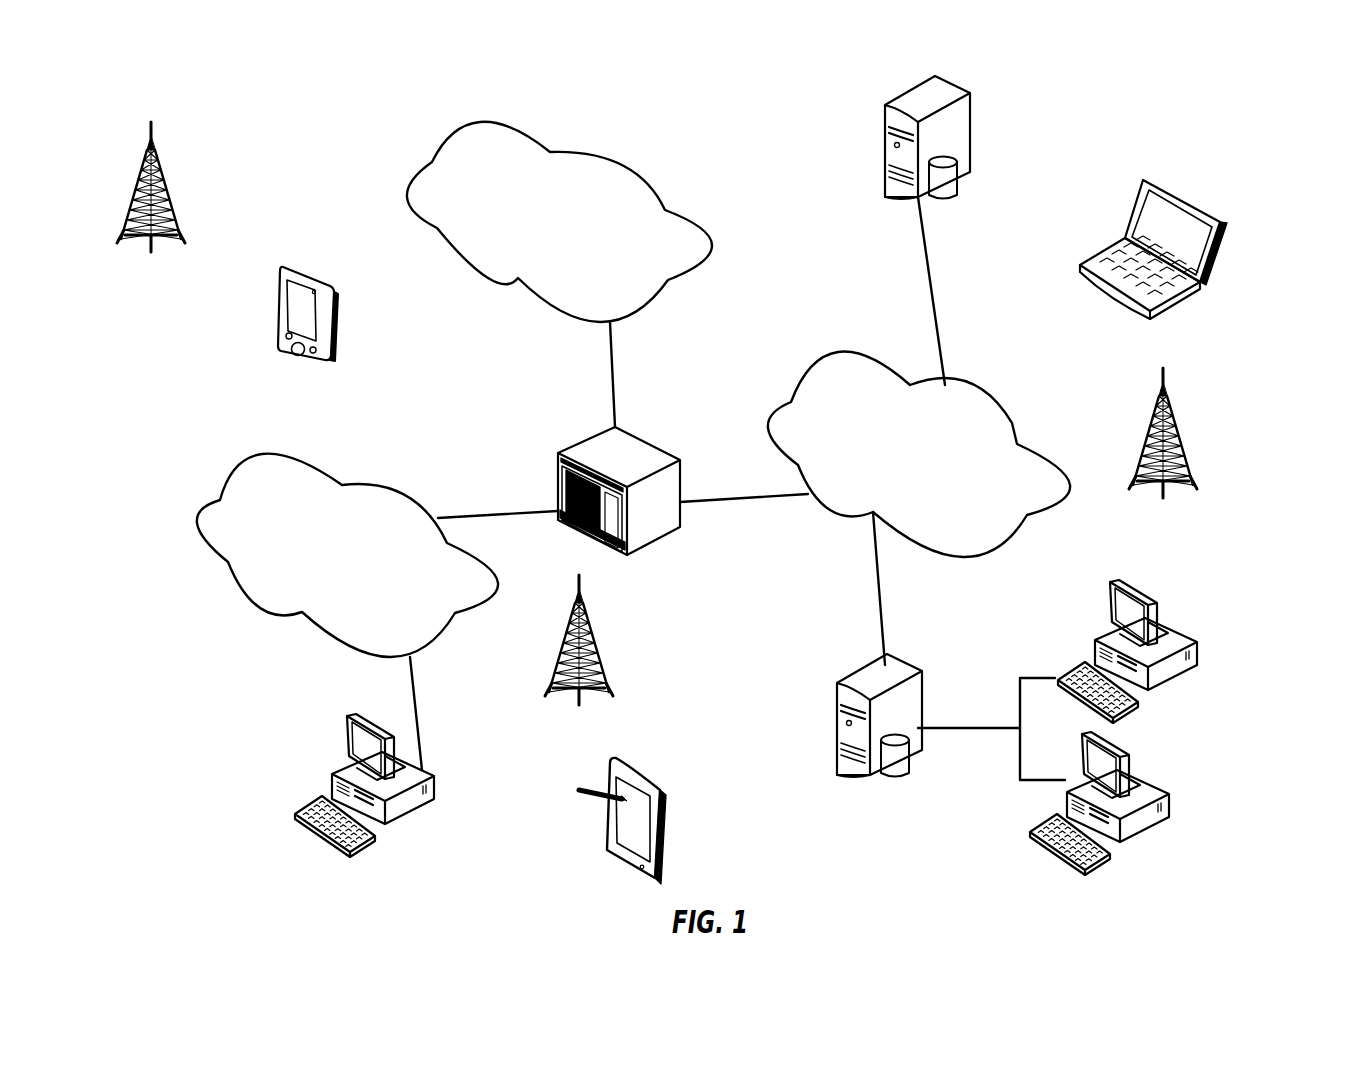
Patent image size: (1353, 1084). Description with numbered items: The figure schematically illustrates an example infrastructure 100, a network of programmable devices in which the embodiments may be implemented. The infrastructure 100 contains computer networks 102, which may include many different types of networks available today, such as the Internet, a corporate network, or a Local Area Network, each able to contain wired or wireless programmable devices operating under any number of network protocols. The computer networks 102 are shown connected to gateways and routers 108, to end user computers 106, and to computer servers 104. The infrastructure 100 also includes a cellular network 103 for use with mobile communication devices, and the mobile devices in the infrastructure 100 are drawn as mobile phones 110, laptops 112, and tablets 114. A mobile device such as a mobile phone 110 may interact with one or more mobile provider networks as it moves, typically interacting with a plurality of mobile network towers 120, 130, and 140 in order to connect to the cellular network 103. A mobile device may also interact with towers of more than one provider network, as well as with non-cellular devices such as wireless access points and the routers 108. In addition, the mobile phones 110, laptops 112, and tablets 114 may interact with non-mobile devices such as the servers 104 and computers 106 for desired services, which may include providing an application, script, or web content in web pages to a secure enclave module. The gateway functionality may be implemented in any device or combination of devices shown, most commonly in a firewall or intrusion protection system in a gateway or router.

The infrastructure 100 is at (1058, 172).
The computer networks 102 is at (327, 472).
The cellular network 103 is at (603, 152).
The computer servers 104 is at (885, 127).
The end user computers 106 is at (1152, 607).
The gateways and routers 108 is at (642, 442).
The mobile phones 110 is at (313, 274).
The laptops 112 is at (1192, 208).
The tablets 114 is at (648, 772).
The mobile network tower 120 is at (579, 657).
The mobile network tower 130 is at (1163, 449).
The mobile network tower 140 is at (151, 204).